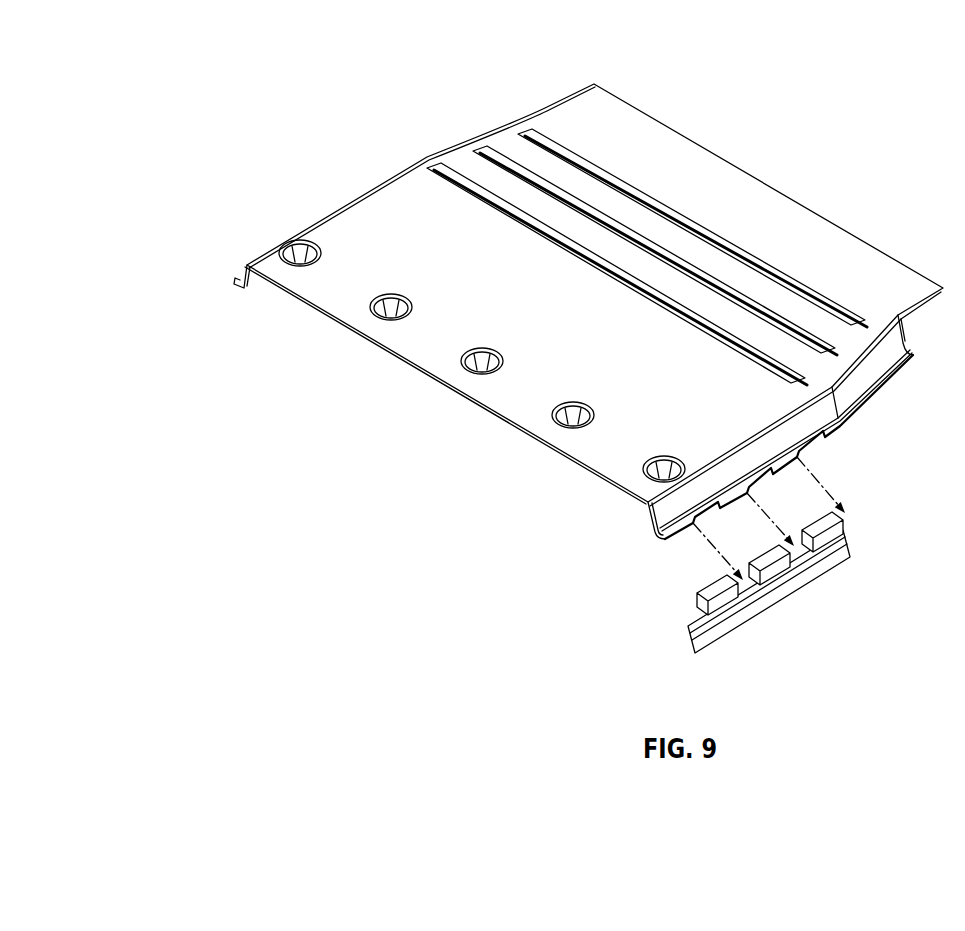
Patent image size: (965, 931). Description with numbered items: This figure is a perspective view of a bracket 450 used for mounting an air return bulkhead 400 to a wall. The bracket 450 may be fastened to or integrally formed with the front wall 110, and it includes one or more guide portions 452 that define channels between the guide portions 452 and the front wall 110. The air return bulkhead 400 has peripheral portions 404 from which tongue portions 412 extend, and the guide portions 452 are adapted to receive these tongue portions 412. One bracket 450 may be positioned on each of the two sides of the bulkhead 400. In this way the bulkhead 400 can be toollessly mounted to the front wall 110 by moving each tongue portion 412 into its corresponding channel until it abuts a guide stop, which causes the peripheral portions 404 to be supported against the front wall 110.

The air return bulkhead 400 is at (563, 311).
The peripheral portions 404 is at (237, 281).
The tongue portions 412 is at (814, 447).
The front wall 110 is at (780, 558).
The bracket 450 is at (752, 630).
The guide portions 452 is at (697, 596).